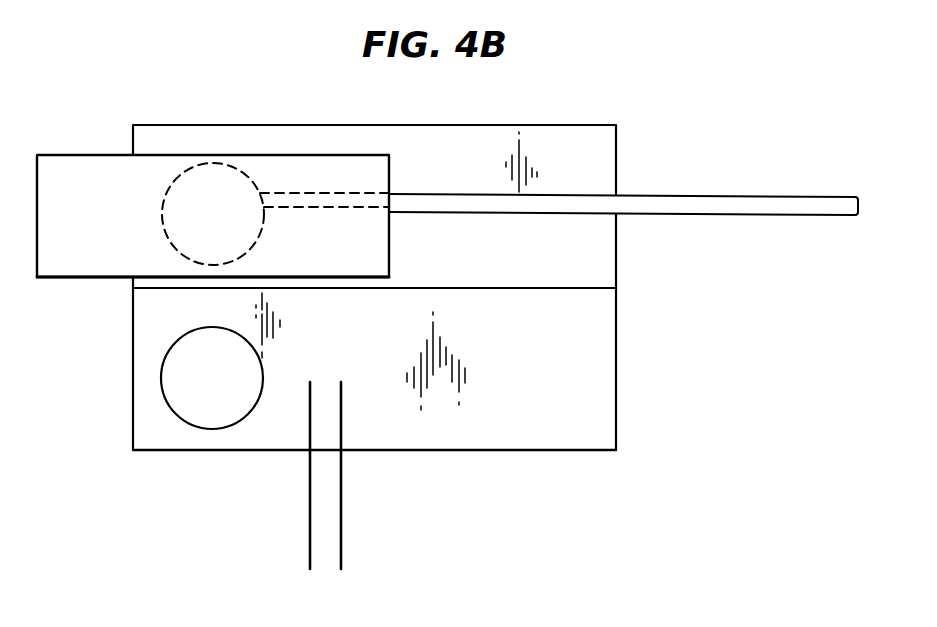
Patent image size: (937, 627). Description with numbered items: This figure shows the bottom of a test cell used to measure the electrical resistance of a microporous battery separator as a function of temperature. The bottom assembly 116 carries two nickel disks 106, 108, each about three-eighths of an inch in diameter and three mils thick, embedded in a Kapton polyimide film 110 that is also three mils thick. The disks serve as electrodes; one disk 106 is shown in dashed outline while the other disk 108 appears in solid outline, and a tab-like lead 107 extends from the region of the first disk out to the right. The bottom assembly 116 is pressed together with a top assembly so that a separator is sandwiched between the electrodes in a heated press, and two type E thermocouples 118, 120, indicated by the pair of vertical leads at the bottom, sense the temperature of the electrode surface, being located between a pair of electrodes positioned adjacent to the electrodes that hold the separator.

The nickel disk 106 is at (211, 207).
The optical fiber 107 is at (760, 195).
The nickel disk 108 is at (187, 360).
The Kapton polyimide film 110 is at (597, 367).
The bottom assembly 116 is at (543, 440).
The type E thermocouple 118 is at (345, 543).
The type E thermocouple 120 is at (306, 540).